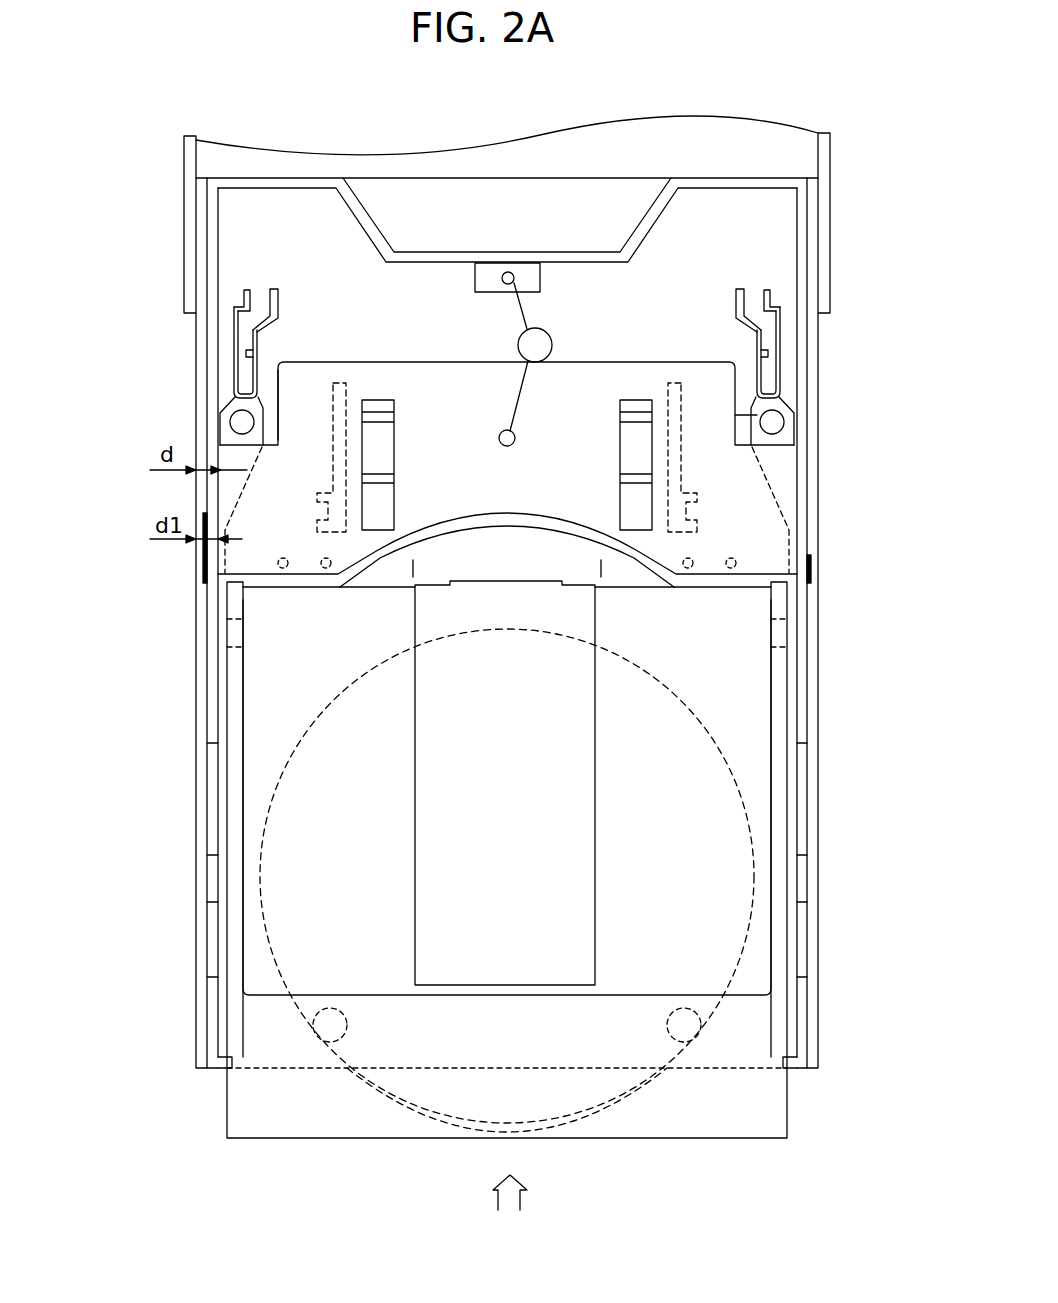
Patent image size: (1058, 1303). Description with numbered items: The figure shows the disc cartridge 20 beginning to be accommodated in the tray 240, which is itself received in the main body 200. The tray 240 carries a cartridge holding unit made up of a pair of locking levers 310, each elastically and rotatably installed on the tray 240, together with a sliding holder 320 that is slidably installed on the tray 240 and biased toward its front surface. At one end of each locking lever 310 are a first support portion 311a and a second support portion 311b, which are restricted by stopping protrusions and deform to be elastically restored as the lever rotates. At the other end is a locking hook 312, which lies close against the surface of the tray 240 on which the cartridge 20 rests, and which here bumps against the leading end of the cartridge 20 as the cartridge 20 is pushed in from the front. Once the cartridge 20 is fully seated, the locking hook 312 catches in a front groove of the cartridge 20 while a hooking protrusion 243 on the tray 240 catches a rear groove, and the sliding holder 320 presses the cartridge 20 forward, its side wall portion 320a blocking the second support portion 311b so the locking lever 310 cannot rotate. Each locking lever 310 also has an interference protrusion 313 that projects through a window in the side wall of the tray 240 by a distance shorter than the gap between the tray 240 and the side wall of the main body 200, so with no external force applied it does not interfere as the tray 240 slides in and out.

The main body 200 is at (184, 204).
The first support portion 311a is at (236, 322).
The second support portion 311b is at (277, 291).
The locking lever 310 is at (235, 399).
The sliding holder 320 is at (793, 406).
The side wall portion 320a is at (278, 382).
The locking hook 312 is at (232, 570).
The interference protrusion 313 is at (204, 571).
The tray 240 is at (807, 798).
The hooking protrusion 243 is at (222, 1068).
The cartridge 20 is at (733, 1130).